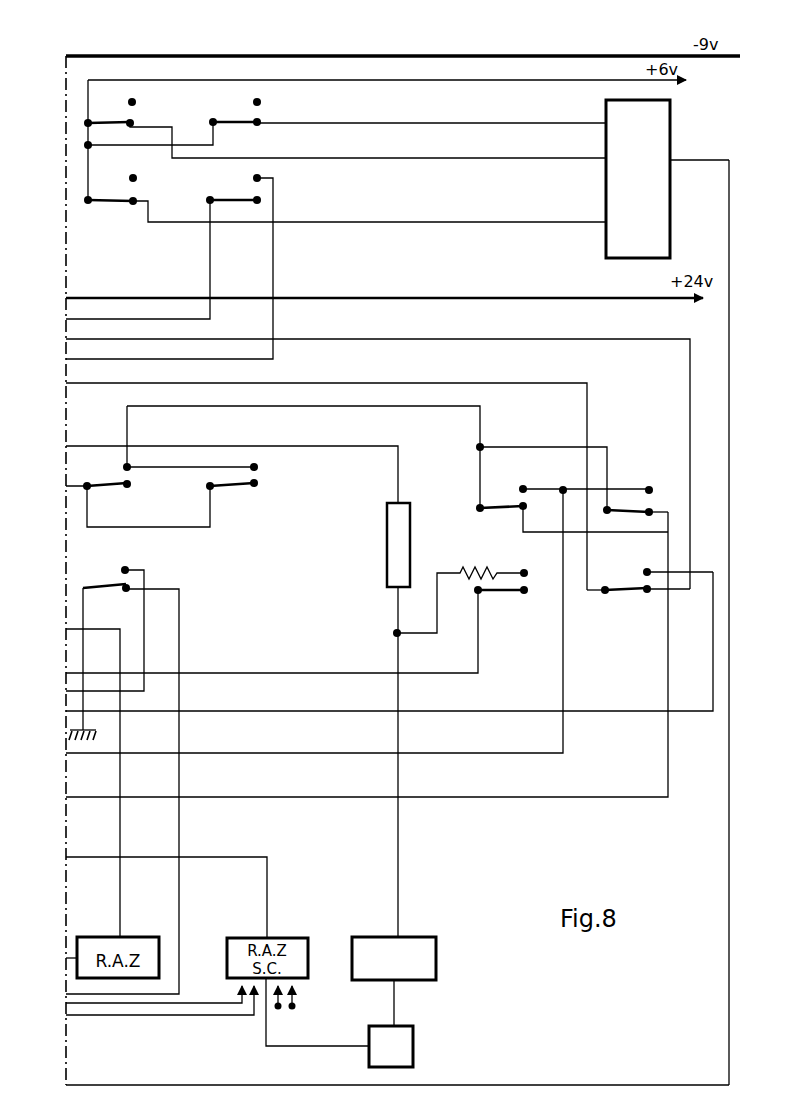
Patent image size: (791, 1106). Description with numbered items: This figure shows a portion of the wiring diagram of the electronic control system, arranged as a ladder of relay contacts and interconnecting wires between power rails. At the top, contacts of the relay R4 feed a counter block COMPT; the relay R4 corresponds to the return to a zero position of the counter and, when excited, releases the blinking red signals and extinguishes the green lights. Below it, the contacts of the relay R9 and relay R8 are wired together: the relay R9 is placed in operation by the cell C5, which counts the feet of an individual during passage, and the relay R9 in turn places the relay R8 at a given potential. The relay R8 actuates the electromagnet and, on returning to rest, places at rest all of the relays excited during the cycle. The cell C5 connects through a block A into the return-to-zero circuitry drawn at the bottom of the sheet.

The relay R4 is at (336, 219).
The relay R8 is at (122, 769).
The relay R9 is at (413, 720).
The counter COMPT is at (667, 179).
The amplifier A is at (394, 981).
The cell C5 is at (391, 1046).